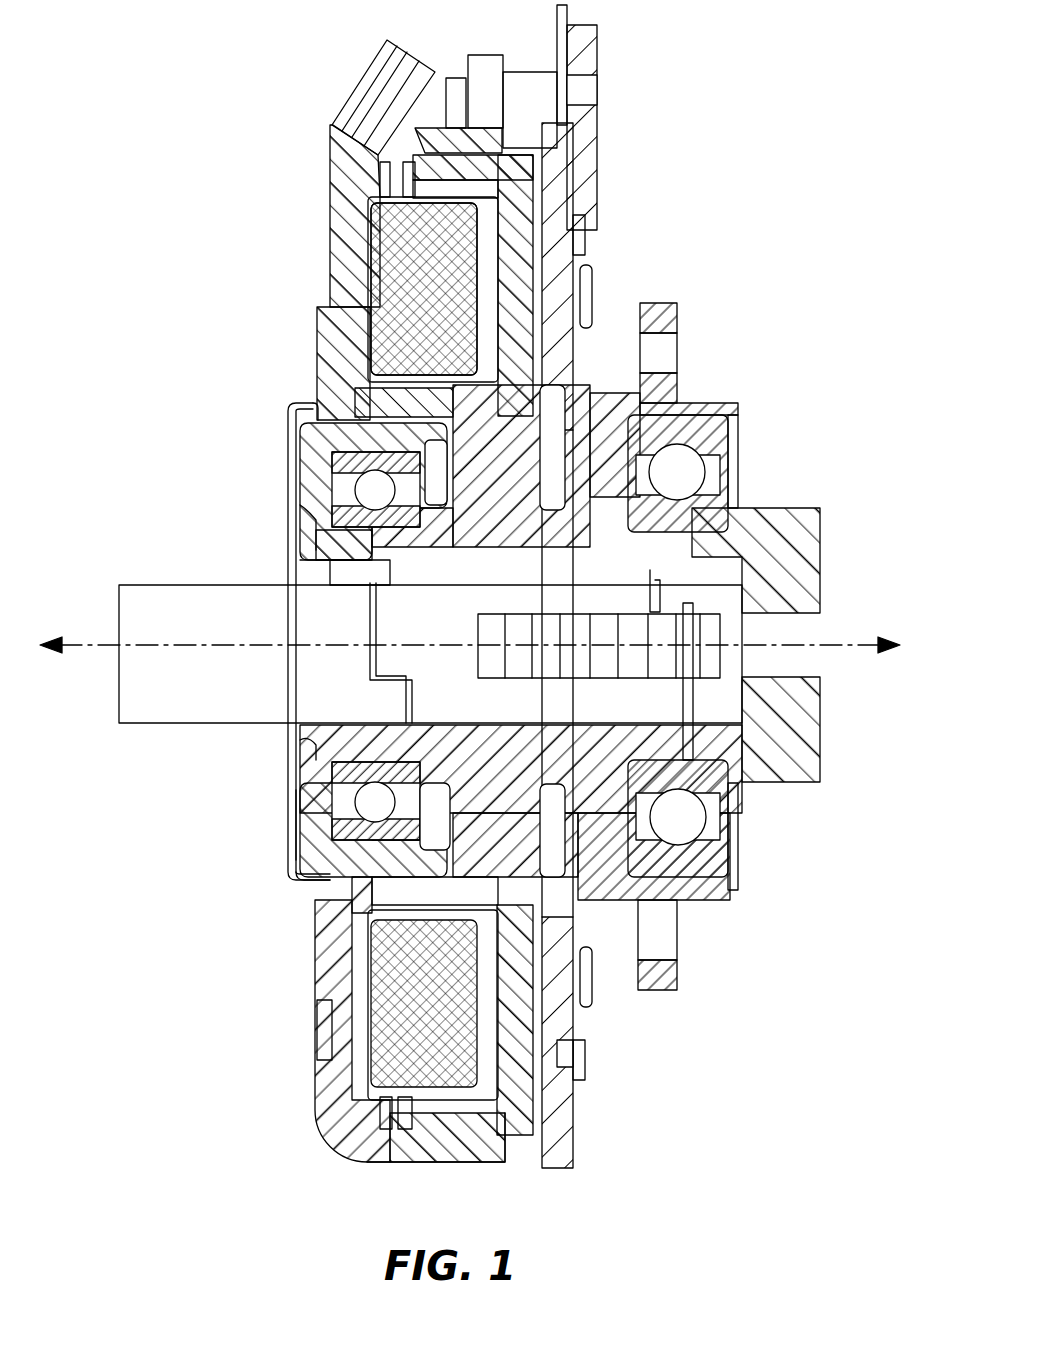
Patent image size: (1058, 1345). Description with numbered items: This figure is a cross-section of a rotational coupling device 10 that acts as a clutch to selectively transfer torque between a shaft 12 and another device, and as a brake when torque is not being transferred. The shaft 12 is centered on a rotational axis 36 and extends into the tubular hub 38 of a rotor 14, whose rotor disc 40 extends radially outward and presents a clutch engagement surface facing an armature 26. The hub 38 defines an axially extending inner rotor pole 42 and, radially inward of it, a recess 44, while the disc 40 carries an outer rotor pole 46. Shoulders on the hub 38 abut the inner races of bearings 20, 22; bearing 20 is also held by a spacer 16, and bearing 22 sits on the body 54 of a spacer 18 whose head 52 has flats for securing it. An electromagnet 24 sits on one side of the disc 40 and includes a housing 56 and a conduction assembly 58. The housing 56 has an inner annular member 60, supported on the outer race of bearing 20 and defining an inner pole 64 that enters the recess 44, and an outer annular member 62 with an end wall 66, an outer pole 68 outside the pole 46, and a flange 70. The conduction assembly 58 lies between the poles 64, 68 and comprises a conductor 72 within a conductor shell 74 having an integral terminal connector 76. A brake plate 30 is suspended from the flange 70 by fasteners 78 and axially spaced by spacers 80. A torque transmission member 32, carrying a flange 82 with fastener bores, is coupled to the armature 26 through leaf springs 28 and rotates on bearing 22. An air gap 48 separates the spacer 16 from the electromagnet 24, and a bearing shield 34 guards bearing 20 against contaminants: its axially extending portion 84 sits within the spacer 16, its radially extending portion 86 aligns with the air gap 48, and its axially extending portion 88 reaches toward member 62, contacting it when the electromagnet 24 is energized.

The rotational coupling device 10 is at (160, 250).
The shaft 12 is at (160, 705).
The rotor 14 is at (520, 415).
The spacer 16 is at (320, 545).
The spacer 18 is at (800, 710).
The bearing 20 is at (393, 560).
The bearing 22 is at (690, 860).
The electromagnet 24 is at (370, 305).
The armature 26 is at (560, 1100).
The springs 28 is at (585, 990).
The brake plate 30 is at (585, 60).
The torque transmission member 32 is at (700, 405).
The bearing shield 34 is at (275, 432).
The rotational axis 36 is at (75, 652).
The hub 38 is at (465, 755).
The rotor disc 40 is at (520, 1060).
The inner rotor pole 42 is at (370, 900).
The recess 44 is at (440, 805).
The outer rotor pole 46 is at (410, 1125).
The air gap 48 is at (310, 520).
The head 52 is at (810, 750).
The body 54 is at (720, 750).
The housing 56 is at (335, 405).
The conduction assembly 58 is at (375, 222).
The inner annular member 60 is at (313, 475).
The outer annular member 62 is at (330, 340).
The inner pole 64 is at (350, 880).
The end wall 66 is at (330, 1085).
The outer pole 68 is at (395, 1160).
The flange 70 is at (486, 90).
The conductor 72 is at (385, 1055).
The conductor shell 74 is at (340, 1025).
The terminal connector 76 is at (365, 105).
The fasteners 78 is at (455, 95).
The spacers 80 is at (530, 95).
The flange 82 is at (665, 315).
The axially extending portion 84 is at (310, 745).
The radially extending portion 86 is at (295, 820).
The axially extending portion 88 is at (300, 885).